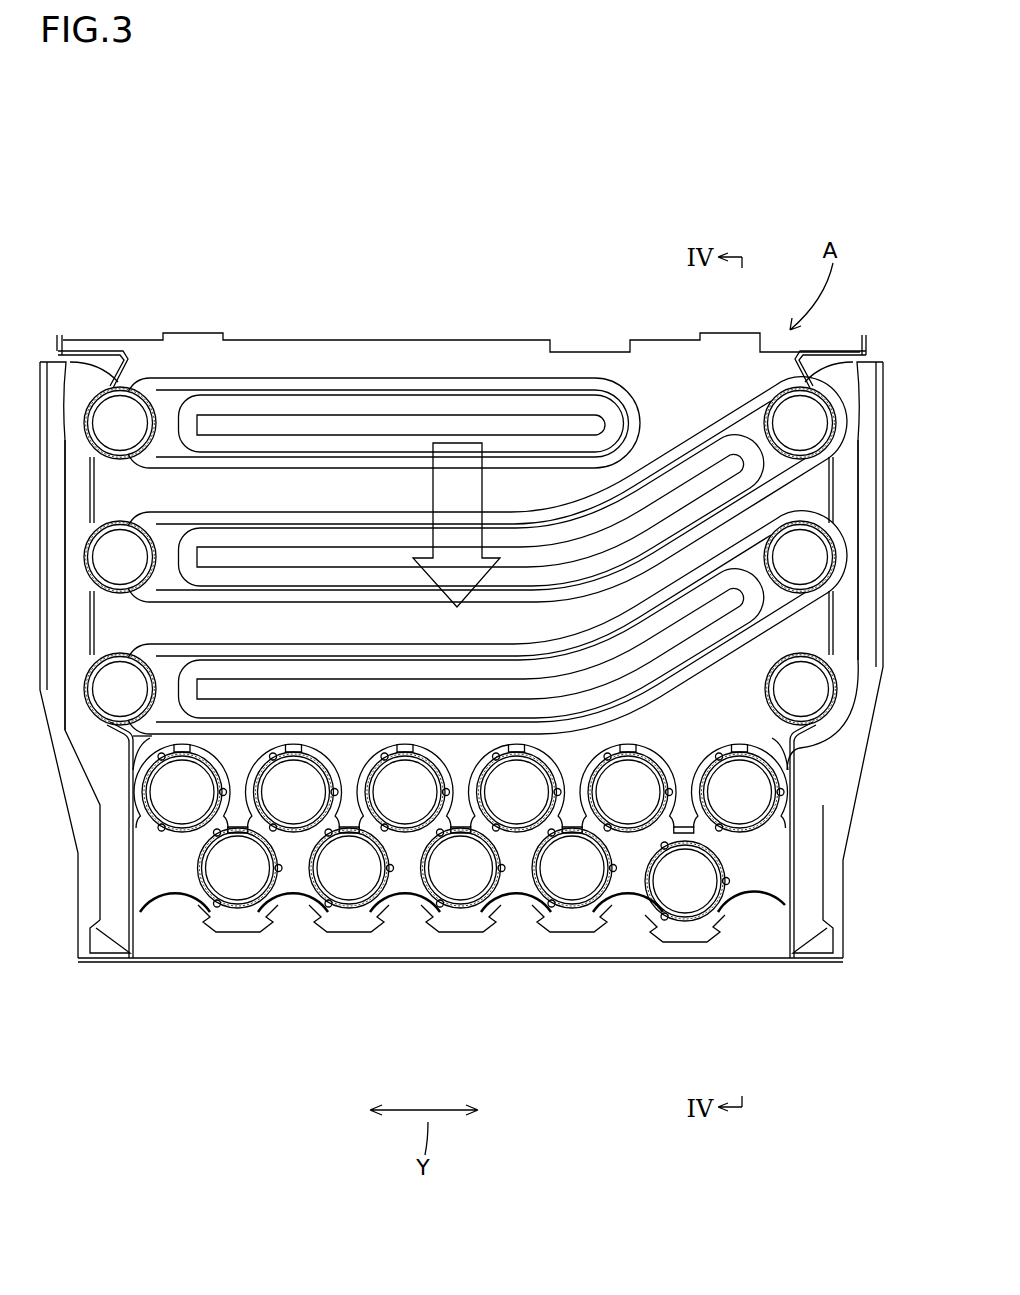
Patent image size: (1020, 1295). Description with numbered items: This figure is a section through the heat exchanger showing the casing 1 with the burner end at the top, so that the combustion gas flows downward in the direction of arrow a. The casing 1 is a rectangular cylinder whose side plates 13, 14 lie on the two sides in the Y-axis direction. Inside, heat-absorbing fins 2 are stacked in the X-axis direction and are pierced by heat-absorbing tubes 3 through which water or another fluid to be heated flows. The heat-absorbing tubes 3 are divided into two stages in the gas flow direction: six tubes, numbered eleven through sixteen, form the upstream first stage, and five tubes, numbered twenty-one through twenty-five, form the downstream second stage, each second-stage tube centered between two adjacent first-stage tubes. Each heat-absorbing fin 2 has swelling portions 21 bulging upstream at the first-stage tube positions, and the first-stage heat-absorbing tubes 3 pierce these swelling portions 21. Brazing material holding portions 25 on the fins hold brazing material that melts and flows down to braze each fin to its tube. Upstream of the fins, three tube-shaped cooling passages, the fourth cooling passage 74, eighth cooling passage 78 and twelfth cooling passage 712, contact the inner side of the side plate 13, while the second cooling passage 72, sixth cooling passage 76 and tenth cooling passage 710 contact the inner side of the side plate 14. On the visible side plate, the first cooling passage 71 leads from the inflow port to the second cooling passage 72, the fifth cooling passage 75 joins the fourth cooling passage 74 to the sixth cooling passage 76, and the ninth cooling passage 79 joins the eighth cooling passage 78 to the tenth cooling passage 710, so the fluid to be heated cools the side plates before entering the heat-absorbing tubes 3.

The casing 1 is at (878, 460).
The heat-absorbing fin 2 is at (432, 934).
The heat-absorbing tube 3 is at (655, 762).
The side plate 13 is at (832, 630).
The side plate 14 is at (95, 622).
The swelling portion 21 is at (773, 757).
The brazing material holding portion 25 is at (741, 748).
The first cooling passage 71 is at (257, 420).
The second cooling passage 72 is at (132, 436).
The fourth cooling passage 74 is at (812, 436).
The fifth cooling passage 75 is at (292, 552).
The sixth cooling passage 76 is at (132, 570).
The eighth cooling passage 78 is at (812, 570).
The ninth cooling passage 79 is at (620, 668).
The tenth cooling passage 710 is at (136, 702).
The twelfth cooling passage 712 is at (817, 702).
The arrow a is at (430, 500).